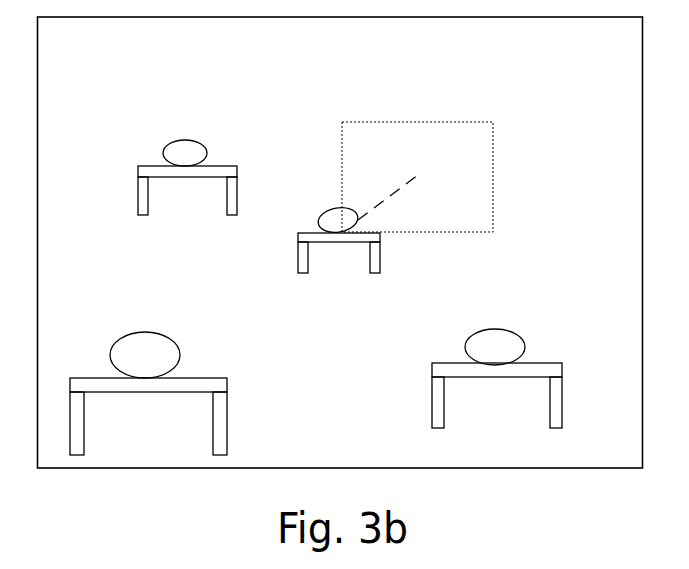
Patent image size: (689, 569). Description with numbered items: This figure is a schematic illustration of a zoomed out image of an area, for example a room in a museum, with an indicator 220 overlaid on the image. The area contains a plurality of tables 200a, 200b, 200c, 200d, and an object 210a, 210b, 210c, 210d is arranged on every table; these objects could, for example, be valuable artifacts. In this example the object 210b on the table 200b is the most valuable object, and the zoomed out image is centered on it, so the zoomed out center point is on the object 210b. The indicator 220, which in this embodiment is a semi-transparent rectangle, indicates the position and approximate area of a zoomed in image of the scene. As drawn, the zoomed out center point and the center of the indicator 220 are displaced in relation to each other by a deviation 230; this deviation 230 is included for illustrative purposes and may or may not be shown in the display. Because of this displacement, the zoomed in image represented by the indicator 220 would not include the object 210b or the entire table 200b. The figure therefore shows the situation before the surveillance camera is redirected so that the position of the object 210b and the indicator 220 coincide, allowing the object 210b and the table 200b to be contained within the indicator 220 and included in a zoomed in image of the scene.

The table 200a is at (137, 165).
The table 200b is at (380, 263).
The table 200c is at (83, 407).
The table 200d is at (447, 398).
The object 210a is at (187, 140).
The object 210b is at (335, 212).
The object 210c is at (110, 358).
The object 210d is at (547, 297).
The indicator 220 is at (492, 177).
The deviation 230 is at (397, 202).